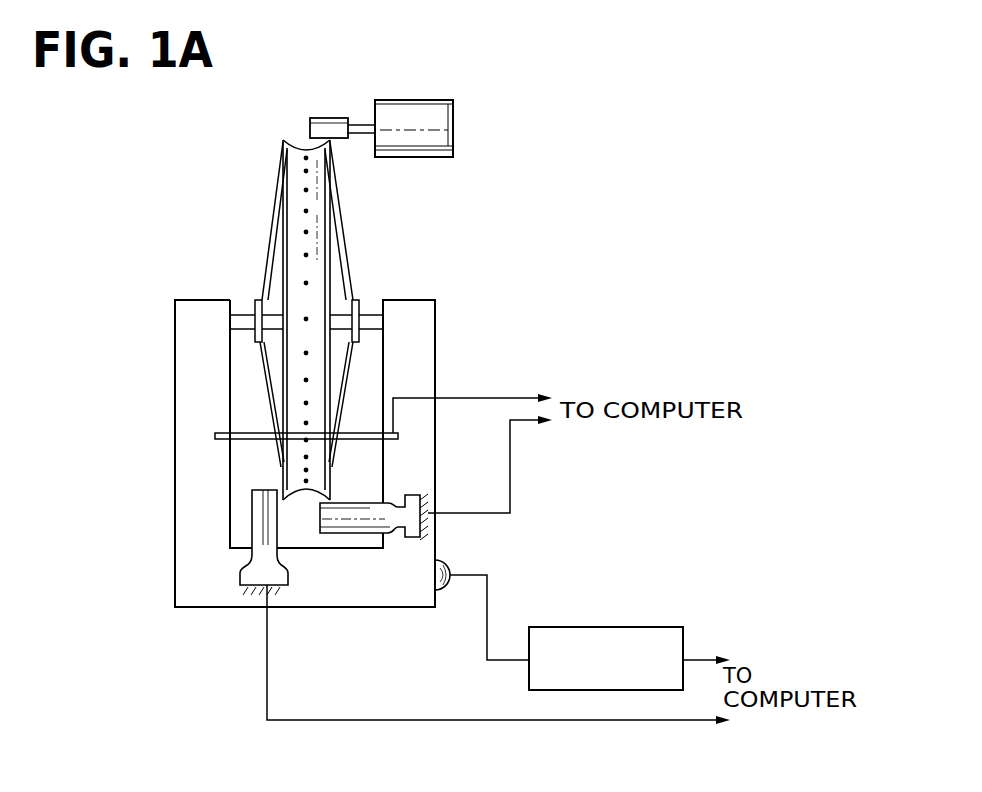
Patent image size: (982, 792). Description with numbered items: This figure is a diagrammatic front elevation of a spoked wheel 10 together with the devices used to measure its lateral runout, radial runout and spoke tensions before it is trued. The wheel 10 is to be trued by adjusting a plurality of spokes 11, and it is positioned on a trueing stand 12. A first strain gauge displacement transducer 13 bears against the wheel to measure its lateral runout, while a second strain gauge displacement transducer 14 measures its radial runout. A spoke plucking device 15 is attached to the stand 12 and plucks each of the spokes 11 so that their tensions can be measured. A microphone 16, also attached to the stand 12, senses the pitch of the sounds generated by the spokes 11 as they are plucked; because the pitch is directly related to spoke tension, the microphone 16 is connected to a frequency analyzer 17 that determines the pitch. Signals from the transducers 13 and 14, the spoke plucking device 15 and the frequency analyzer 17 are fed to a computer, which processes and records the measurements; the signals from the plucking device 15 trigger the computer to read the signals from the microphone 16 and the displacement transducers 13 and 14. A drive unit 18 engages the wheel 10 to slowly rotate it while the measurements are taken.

The spoked wheel 10 is at (292, 185).
The spokes 11 is at (343, 253).
The trueing stand 12 is at (423, 315).
The first strain gauge displacement transducer 13 is at (257, 501).
The second strain gauge displacement transducer 14 is at (345, 523).
The spoke plucking device 15 is at (350, 430).
The microphone 16 is at (448, 563).
The frequency analyzer 17 is at (595, 627).
The drive unit 18 is at (420, 108).